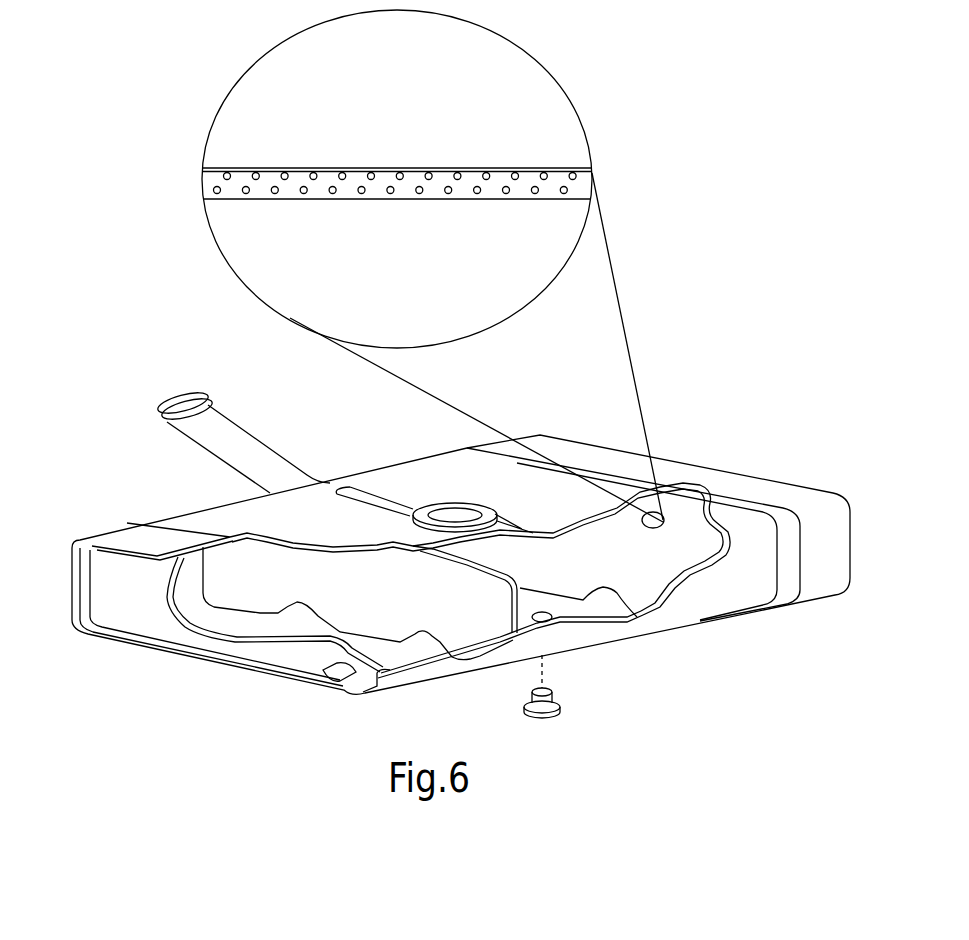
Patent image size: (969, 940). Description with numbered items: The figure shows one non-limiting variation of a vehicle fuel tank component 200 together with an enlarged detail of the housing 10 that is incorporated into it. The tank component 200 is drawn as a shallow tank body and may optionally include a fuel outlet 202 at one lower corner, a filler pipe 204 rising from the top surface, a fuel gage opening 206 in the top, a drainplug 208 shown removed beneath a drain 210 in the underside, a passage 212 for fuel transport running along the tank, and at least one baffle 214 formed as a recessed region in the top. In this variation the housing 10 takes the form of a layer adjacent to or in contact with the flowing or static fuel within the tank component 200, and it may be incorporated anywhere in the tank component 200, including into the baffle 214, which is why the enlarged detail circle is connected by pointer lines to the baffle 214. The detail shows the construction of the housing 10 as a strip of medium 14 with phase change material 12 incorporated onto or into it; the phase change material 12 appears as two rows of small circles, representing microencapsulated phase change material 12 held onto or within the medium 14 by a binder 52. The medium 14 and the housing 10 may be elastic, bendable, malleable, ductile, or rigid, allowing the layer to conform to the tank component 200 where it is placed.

The housing 10 is at (203, 162).
The phase change material 12 is at (222, 181).
The medium 14 is at (264, 165).
The binder 52 is at (557, 176).
The tank component 200 is at (685, 322).
The fuel outlet 202 is at (340, 678).
The filler pipe 204 is at (225, 428).
The fuel gage opening 206 is at (455, 513).
The drainplug 208 is at (543, 717).
The drain 210 is at (547, 622).
The passage 212 is at (617, 612).
The baffle 214 is at (670, 520).